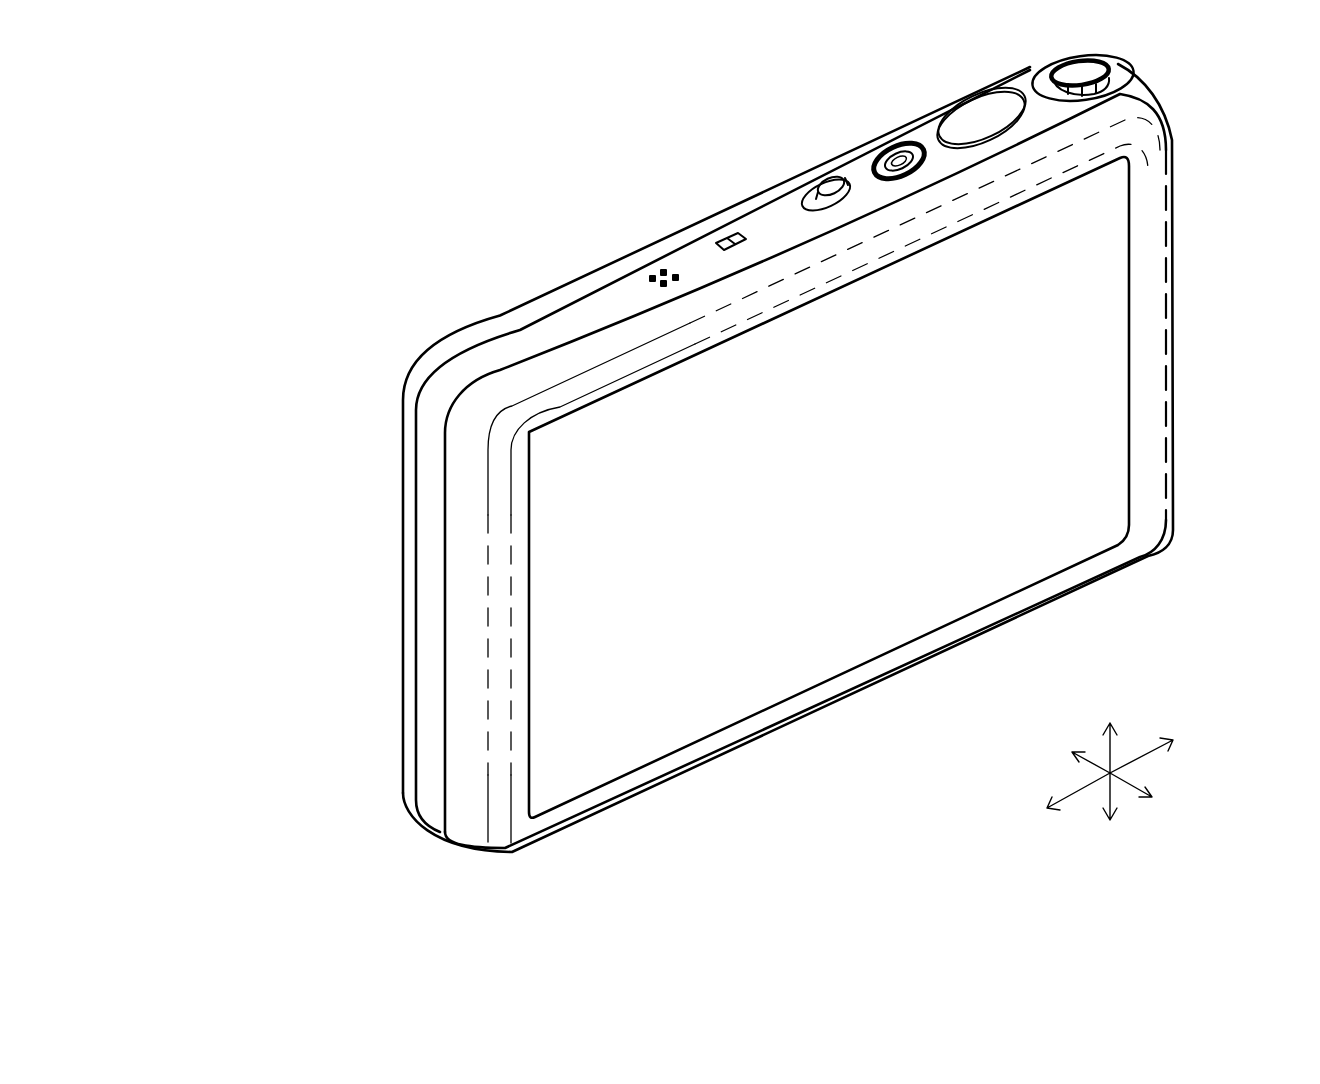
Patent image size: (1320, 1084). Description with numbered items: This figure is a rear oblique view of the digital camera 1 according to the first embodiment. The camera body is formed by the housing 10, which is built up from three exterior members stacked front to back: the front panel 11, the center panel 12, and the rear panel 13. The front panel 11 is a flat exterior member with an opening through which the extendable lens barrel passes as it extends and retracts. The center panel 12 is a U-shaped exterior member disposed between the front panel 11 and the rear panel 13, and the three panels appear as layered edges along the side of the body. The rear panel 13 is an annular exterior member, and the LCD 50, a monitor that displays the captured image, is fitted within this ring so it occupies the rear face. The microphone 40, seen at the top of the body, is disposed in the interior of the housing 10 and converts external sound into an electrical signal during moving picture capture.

The digital camera 1 is at (512, 228).
The housing 10 is at (235, 513).
The front panel 11 is at (407, 482).
The center panel 12 is at (432, 547).
The rear panel 13 is at (467, 595).
The microphone 40 is at (742, 240).
The LCD 50 is at (1062, 362).